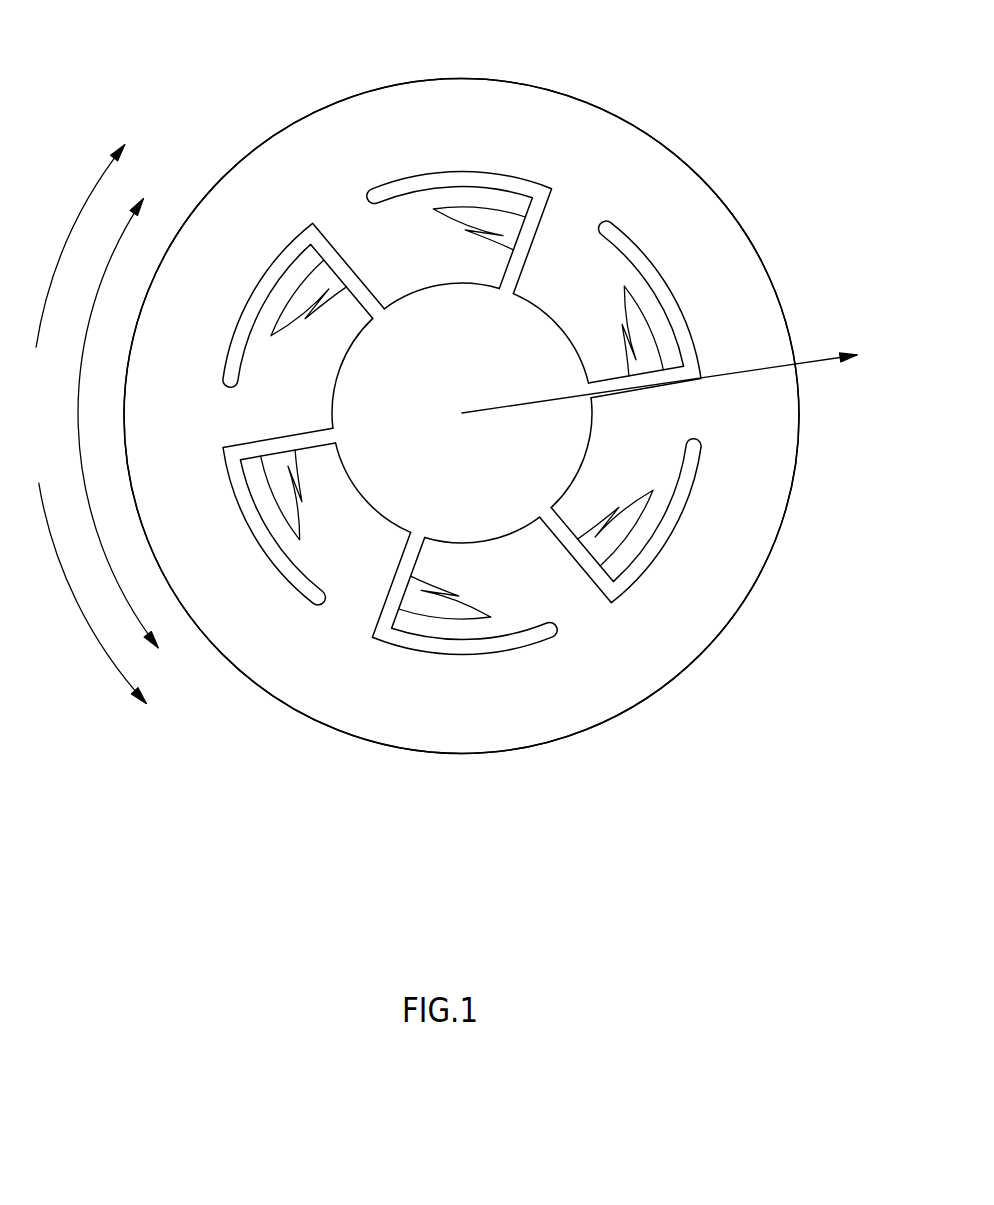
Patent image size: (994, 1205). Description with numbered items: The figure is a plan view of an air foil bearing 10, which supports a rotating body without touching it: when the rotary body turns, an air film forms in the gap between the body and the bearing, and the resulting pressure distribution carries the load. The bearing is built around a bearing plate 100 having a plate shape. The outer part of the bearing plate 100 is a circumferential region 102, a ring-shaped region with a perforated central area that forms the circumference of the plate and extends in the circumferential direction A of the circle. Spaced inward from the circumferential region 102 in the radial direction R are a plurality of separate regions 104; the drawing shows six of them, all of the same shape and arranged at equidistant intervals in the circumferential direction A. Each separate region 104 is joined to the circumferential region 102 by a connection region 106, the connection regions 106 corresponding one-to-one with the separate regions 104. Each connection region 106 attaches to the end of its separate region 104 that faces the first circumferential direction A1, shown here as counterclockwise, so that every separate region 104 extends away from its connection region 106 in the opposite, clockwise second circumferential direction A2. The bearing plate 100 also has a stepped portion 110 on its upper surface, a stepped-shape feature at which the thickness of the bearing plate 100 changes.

The air foil bearing 10 is at (135, 39).
The bearing plate 100 is at (708, 183).
The circumferential region 102 is at (478, 712).
The separate region 104 is at (502, 605).
The connection region 106 is at (578, 608).
The stepped portion 110 is at (655, 343).
The radial direction R is at (757, 372).
The circumferential direction A is at (80, 398).
The first circumferential direction A1 is at (77, 612).
The second circumferential direction A2 is at (68, 240).